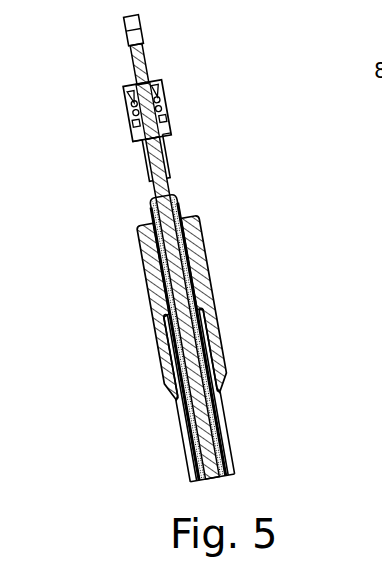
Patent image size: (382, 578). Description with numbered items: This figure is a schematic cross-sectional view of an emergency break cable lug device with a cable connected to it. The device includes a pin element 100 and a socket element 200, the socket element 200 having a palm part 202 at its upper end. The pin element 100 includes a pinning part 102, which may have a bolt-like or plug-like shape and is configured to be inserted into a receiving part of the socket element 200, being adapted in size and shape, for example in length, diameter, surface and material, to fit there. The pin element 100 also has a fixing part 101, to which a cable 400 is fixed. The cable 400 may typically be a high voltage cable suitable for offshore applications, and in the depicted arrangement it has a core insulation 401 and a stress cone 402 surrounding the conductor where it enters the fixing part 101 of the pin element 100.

The palm part 202 is at (154, 30).
The socket element 200 is at (163, 84).
The pinning part 102 is at (129, 98).
The fixing part 101 is at (125, 165).
The pin element 100 is at (158, 146).
The stress cone 402 is at (214, 350).
The core insulation 401 is at (220, 405).
The cable 400 is at (222, 462).